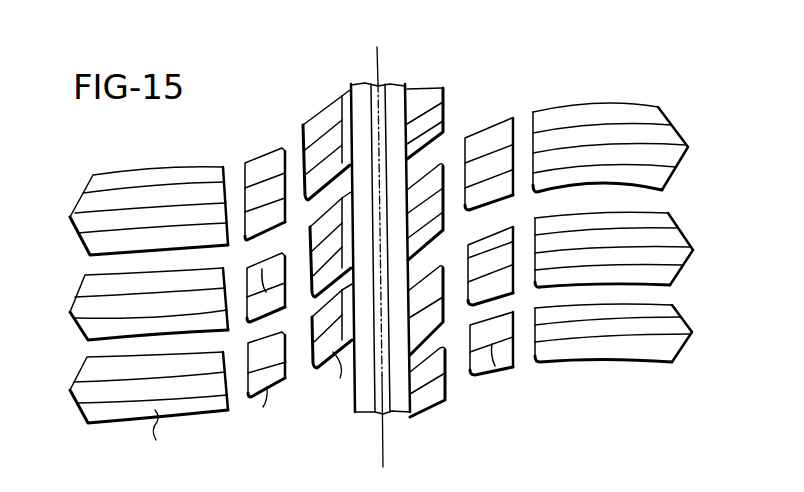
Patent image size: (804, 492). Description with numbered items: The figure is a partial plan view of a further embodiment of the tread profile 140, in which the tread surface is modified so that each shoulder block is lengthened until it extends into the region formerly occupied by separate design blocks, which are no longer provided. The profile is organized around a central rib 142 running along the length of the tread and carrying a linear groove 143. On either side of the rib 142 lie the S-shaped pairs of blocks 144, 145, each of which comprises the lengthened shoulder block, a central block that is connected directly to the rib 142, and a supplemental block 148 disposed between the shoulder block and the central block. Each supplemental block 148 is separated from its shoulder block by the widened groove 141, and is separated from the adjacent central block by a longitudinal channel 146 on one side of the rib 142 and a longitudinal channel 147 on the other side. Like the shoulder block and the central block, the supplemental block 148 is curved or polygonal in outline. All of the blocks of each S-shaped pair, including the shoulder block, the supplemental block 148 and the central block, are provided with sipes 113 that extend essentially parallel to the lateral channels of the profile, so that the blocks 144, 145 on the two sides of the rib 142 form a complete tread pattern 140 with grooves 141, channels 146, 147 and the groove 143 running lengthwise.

The tread pattern 140 is at (486, 90).
The widened groove 141 is at (238, 178).
The rib 142 is at (392, 95).
The linear groove 143 is at (373, 103).
The S-shaped pair of blocks 144 is at (143, 200).
The S-shaped pair of blocks 145 is at (596, 148).
The longitudinal channel 146 is at (302, 357).
The longitudinal channel 147 is at (458, 363).
The supplemental block 148 is at (268, 162).
The sipes 113 is at (262, 270).